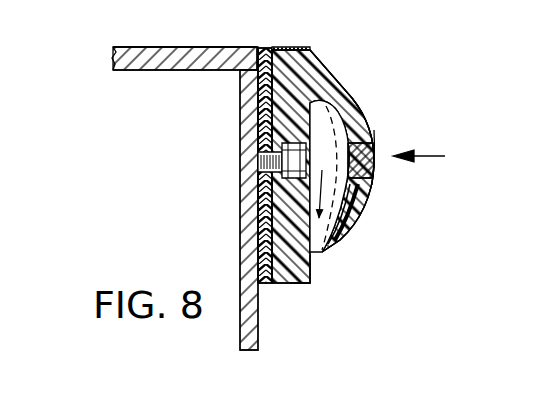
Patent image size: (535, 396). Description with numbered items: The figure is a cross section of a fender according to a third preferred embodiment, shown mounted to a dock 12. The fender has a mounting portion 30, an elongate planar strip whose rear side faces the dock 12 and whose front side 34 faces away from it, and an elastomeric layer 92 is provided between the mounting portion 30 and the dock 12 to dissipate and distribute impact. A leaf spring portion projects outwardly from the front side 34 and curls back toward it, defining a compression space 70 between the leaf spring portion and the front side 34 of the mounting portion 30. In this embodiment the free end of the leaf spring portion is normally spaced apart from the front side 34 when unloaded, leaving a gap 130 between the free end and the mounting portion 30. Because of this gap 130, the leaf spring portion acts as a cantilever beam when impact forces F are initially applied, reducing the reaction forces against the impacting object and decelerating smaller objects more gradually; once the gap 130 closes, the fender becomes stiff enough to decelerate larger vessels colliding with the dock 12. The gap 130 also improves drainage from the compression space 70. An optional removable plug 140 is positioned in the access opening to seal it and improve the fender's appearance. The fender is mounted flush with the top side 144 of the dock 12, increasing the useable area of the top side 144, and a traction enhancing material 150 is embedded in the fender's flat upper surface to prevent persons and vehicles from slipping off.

The top side 144 is at (183, 47).
The dock 12 is at (237, 38).
The elastomeric layer 92 is at (262, 286).
The traction enhancing material 150 is at (298, 47).
The mounting portion 30 is at (286, 283).
The compression space 70 is at (334, 88).
The gap 130 is at (329, 176).
The removable plug 140 is at (373, 145).
The impact force F is at (419, 166).
The front side 34 is at (318, 280).